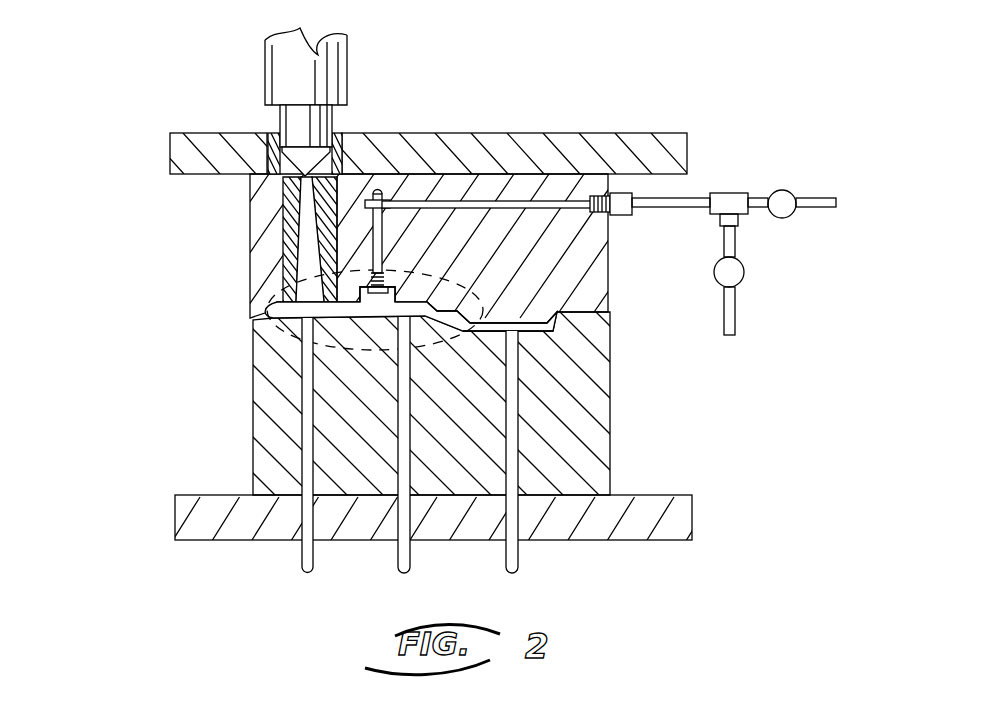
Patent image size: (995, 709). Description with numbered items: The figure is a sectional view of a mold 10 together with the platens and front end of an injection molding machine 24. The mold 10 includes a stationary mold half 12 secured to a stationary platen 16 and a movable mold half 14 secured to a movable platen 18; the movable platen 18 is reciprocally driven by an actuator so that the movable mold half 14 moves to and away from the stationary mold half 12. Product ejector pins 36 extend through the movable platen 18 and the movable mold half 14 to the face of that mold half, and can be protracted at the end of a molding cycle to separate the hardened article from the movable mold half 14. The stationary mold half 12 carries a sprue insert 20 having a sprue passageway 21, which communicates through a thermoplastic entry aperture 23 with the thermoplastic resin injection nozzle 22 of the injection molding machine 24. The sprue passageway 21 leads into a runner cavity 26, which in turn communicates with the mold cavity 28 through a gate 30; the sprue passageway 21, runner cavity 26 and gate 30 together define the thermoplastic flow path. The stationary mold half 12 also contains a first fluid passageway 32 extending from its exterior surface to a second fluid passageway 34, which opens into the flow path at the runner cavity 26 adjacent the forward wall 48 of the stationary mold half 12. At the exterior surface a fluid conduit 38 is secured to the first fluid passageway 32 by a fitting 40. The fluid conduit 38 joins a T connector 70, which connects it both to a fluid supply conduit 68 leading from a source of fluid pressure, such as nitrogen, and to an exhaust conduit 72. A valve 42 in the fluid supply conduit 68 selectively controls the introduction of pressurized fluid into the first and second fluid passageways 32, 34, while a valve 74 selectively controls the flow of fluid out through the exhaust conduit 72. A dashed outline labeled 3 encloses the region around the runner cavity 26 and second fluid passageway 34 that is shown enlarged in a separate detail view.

The mold 10 is at (100, 342).
The stationary mold half 12 is at (256, 210).
The movable mold half 14 is at (276, 402).
The stationary platen 16 is at (187, 148).
The movable platen 18 is at (192, 498).
The sprue insert 20 is at (282, 253).
The sprue passageway 21 is at (298, 292).
The thermoplastic resin injection nozzle 22 is at (278, 152).
The thermoplastic entry aperture 23 is at (343, 176).
The injection molding machine 24 is at (323, 80).
The runner cavity 26 is at (278, 304).
The mold cavity 28 is at (538, 312).
The gate 30 is at (446, 303).
The first fluid passageway 32 is at (530, 201).
The second fluid passageway 34 is at (423, 300).
The product ejector pins 36 is at (307, 465).
The fluid conduit 38 is at (690, 199).
The fitting 40 is at (622, 216).
The valve 42 is at (785, 218).
The forward wall 48 is at (383, 243).
The fluid supply conduit 68 is at (807, 199).
The T connector 70 is at (730, 195).
The exhaust conduit 72 is at (738, 245).
The valve 74 is at (742, 288).
The FIG. 3 detail region 3 is at (290, 347).